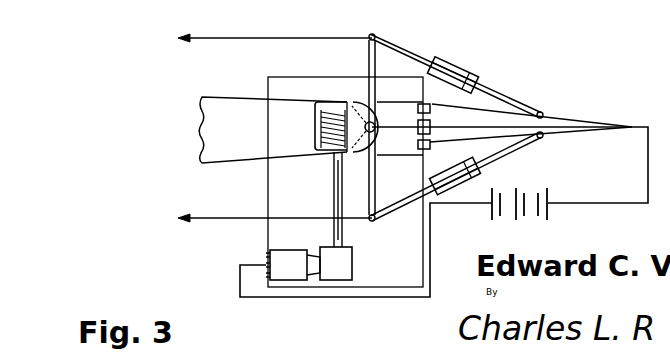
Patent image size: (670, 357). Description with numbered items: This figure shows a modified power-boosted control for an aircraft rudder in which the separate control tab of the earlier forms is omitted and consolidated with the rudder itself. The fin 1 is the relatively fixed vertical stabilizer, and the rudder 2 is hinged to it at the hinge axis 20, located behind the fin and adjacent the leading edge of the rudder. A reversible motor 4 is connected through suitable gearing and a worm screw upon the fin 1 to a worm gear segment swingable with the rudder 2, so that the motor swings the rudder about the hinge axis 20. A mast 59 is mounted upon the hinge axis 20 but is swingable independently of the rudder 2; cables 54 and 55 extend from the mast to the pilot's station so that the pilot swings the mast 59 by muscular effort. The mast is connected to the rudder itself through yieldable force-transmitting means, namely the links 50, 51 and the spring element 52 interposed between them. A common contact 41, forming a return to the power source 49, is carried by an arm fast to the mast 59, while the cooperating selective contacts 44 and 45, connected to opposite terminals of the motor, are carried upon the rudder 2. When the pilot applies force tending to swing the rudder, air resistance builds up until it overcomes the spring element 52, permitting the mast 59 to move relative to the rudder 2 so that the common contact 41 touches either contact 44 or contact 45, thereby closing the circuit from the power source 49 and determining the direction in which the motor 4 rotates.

The fin 1 is at (225, 107).
The rudder 2 is at (592, 125).
The motor 4 is at (288, 268).
The hinge axis 20 is at (367, 121).
The common contact 41 is at (431, 128).
The contact 44 is at (431, 108).
The contact 45 is at (418, 146).
The power source 49 is at (533, 190).
The link 50 is at (430, 62).
The link 51 is at (503, 96).
The spring element 52 is at (460, 72).
The cable 54 is at (230, 36).
The cable 55 is at (230, 220).
The mast 59 is at (376, 66).